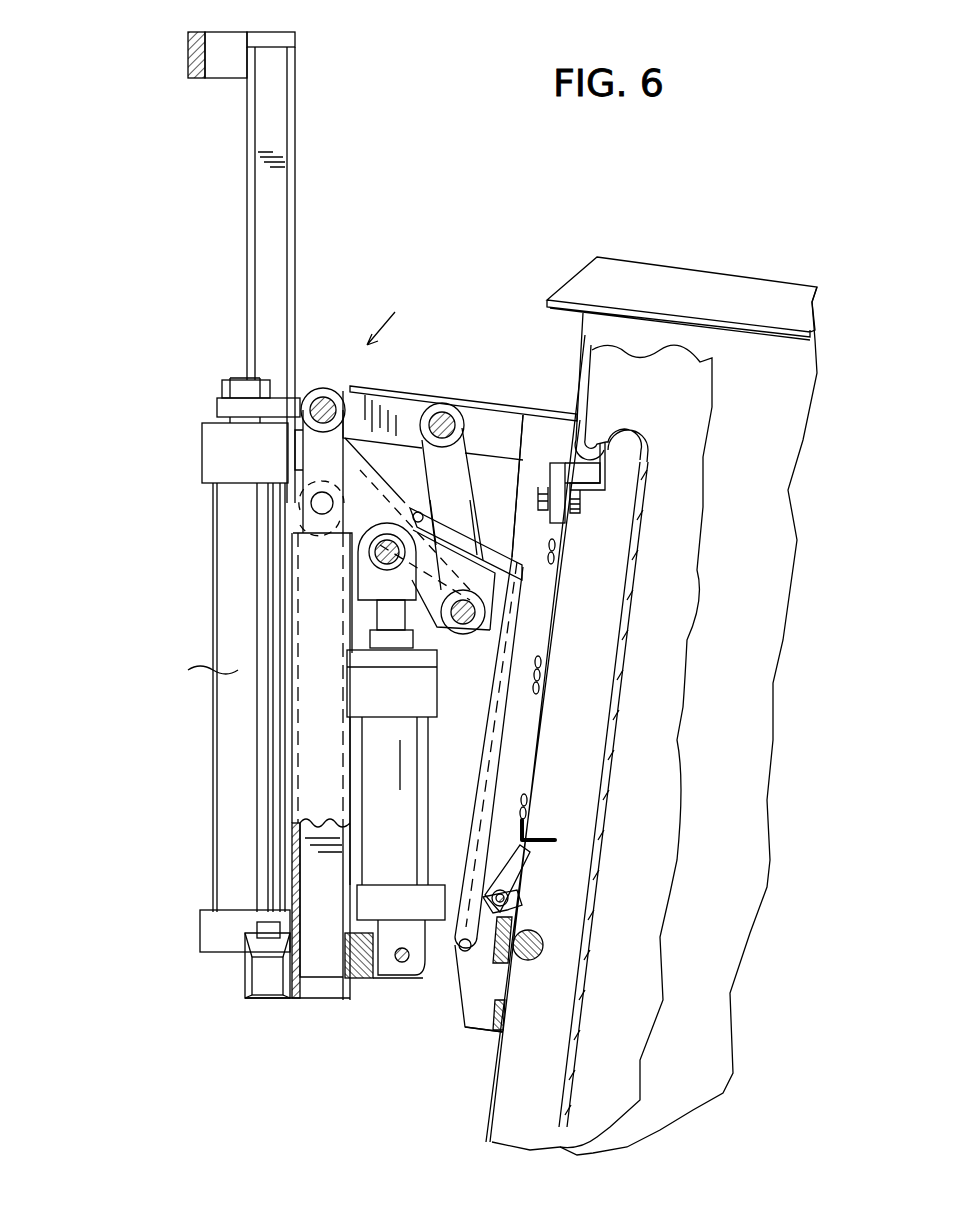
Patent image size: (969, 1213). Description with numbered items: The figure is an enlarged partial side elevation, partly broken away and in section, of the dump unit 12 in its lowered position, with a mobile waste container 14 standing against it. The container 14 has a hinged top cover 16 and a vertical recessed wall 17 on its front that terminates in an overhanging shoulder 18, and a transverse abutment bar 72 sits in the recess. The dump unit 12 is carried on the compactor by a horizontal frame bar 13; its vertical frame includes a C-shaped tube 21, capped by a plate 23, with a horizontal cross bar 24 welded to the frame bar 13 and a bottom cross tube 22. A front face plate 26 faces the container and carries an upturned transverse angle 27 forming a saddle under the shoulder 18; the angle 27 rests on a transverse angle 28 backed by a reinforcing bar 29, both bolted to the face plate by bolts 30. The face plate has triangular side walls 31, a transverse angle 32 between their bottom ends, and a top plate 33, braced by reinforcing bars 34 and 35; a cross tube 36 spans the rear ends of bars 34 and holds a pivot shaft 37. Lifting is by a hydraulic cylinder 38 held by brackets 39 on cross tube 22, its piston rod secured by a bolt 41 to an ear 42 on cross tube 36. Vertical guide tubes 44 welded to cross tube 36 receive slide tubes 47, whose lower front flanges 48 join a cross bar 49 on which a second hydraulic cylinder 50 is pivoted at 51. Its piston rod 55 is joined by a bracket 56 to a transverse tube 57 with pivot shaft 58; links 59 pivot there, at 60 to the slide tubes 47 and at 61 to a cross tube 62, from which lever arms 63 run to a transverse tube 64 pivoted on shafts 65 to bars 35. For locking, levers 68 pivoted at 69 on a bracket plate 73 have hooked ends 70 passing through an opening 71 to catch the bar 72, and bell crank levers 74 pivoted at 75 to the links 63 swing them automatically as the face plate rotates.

The dump unit 12 is at (395, 316).
The horizontal frame bar 13 is at (185, 45).
The mobile waste container 14 is at (792, 743).
The top cover 16 is at (712, 282).
The vertical recessed wall 17 is at (622, 700).
The overhanging shoulder 18 is at (597, 440).
The C-shaped tube 21 is at (296, 220).
The cross tube 22 is at (270, 998).
The cap plate 23 is at (275, 38).
The horizontal cross bar 24 is at (222, 72).
The front face plate 26 is at (545, 675).
The upturned transverse angle 27 is at (642, 462).
The transverse angle 28 is at (595, 495).
The reinforcing bar 29 is at (550, 480).
The bolts 30 is at (560, 530).
The triangular side wall 31 is at (528, 793).
The transverse angle 32 is at (478, 1040).
The top plate 33 is at (500, 405).
The reinforcing bar 34 is at (532, 738).
The reinforcing bar 35 is at (395, 402).
The cross tube 36 is at (325, 388).
The pivot shaft 37 is at (338, 425).
The hydraulic cylinder 38 is at (213, 670).
The bracket 39 is at (240, 945).
The bolt 41 is at (225, 385).
The ear 42 is at (217, 407).
The vertical guide tube 44 is at (292, 725).
The slide tube 47 is at (288, 470).
The front flange 48 is at (355, 975).
The cross bar 49 is at (345, 955).
The hydraulic cylinder 50 is at (402, 808).
The pivot 51 is at (405, 963).
The piston rod 55 is at (378, 618).
The bracket 56 is at (420, 544).
The transverse tube 57 is at (395, 530).
The pivot shaft 58 is at (360, 580).
The link 59 is at (322, 593).
The pivot 60 is at (320, 508).
The pivot 61 is at (485, 612).
The cross tube 62 is at (455, 630).
The lever arm 63 is at (455, 498).
The transverse tube 64 is at (462, 425).
The pivot shaft 65 is at (442, 403).
The lever 68 is at (515, 875).
The pivot 69 is at (510, 898).
The hooked end 70 is at (540, 835).
The opening 71 is at (512, 920).
The transverse abutment bar 72 is at (525, 960).
The bracket plate 73 is at (495, 953).
The bell crank lever 74 is at (512, 700).
The pivot 75 is at (418, 500).